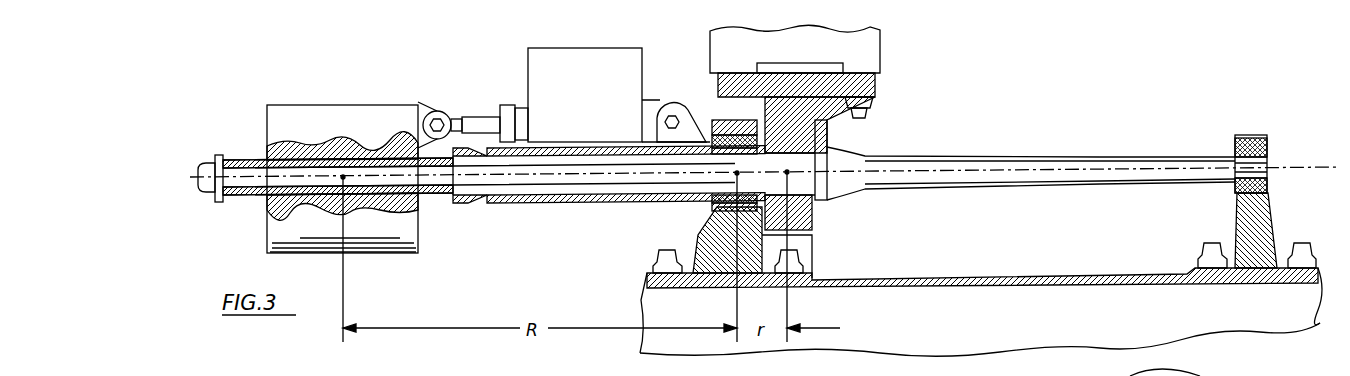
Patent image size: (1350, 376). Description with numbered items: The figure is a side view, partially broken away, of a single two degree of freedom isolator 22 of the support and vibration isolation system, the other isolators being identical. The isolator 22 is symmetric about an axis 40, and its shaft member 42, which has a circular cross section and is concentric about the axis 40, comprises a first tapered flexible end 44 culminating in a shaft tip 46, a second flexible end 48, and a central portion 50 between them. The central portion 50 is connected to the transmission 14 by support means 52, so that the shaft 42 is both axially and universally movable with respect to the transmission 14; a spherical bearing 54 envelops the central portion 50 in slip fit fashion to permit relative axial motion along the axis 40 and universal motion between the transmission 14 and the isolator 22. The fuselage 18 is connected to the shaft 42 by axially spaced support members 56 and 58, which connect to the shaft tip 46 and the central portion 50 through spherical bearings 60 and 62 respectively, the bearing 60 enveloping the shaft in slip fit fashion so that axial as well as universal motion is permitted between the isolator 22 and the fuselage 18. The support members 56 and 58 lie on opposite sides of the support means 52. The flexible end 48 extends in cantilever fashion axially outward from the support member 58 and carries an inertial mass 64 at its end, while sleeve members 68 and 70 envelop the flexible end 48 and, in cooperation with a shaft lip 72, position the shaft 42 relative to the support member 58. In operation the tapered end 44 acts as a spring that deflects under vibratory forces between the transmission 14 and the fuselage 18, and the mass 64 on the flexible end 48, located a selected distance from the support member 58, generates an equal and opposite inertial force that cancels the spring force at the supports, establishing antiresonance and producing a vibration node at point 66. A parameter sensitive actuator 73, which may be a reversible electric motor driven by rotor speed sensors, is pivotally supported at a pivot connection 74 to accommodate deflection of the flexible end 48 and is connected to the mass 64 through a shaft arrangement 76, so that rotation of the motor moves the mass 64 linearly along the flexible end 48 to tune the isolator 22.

The transmission 14 is at (882, 52).
The fuselage 18 is at (975, 311).
The isolator 22 is at (1043, 96).
The axis 40 is at (988, 172).
The shaft member 42 is at (628, 182).
The first tapered flexible end 44 is at (1117, 157).
The shaft tip 46 is at (1266, 170).
The second flexible end 48 is at (443, 182).
The central portion 50 is at (803, 185).
The support means 52 is at (882, 90).
The spherical bearing 54 is at (810, 218).
The support member 56 is at (1272, 230).
The support member 58 is at (718, 280).
The spherical bearing 60 is at (1258, 135).
The spherical bearing 62 is at (745, 130).
The inertial mass 64 is at (327, 105).
The vibration node point 66 is at (796, 113).
The sleeve member 68 is at (515, 205).
The sleeve member 70 is at (245, 159).
The shaft lip 72 is at (822, 155).
The parameter sensitive actuator 73 is at (628, 53).
The pivot connection 74 is at (678, 108).
The shaft arrangement 76 is at (488, 117).